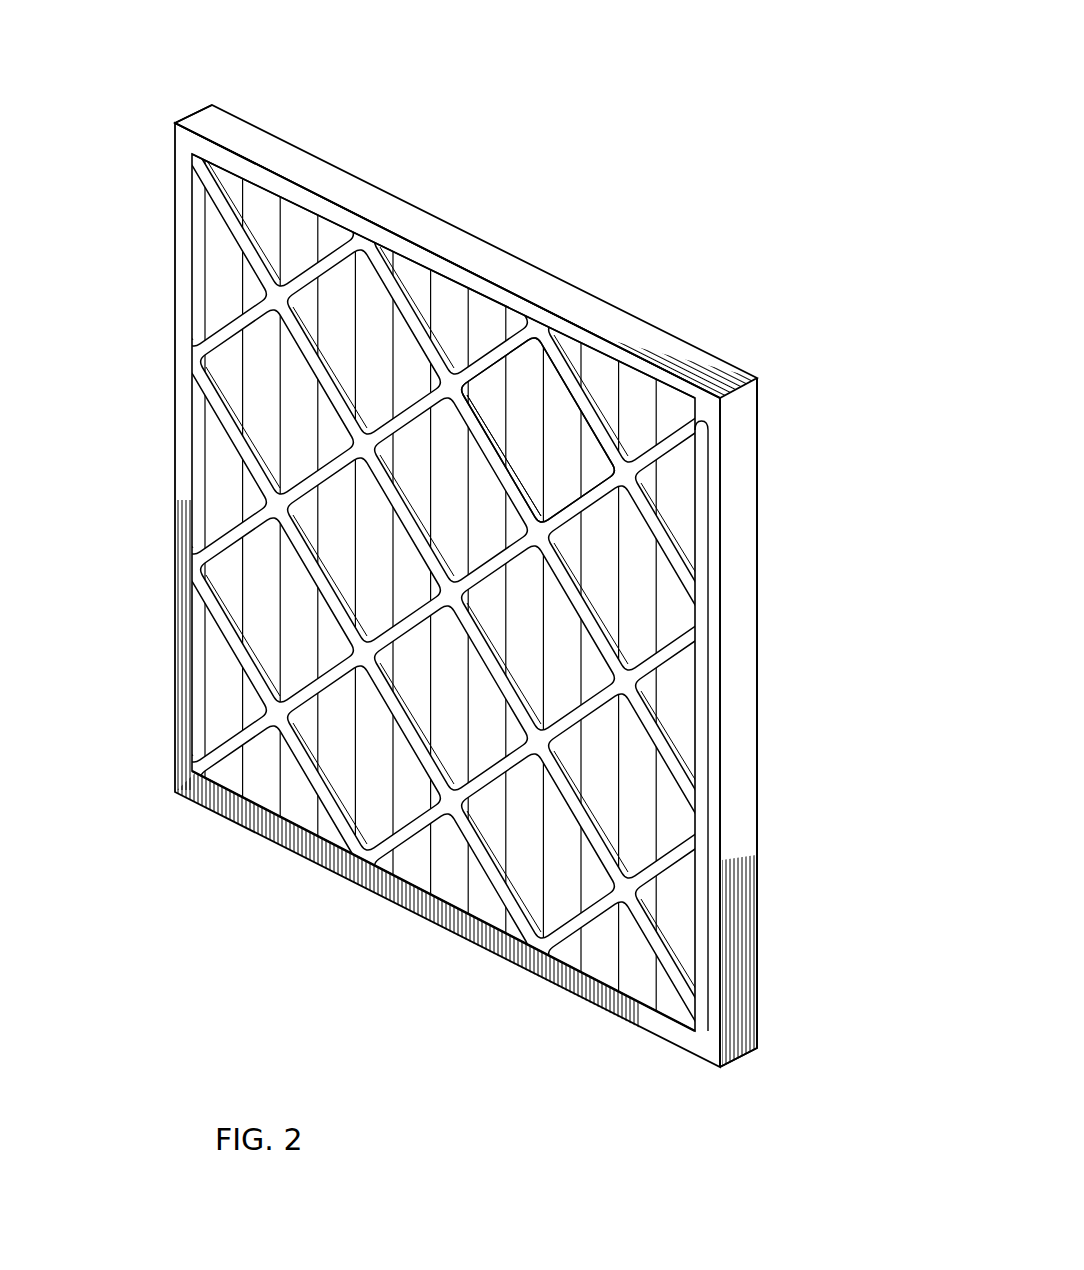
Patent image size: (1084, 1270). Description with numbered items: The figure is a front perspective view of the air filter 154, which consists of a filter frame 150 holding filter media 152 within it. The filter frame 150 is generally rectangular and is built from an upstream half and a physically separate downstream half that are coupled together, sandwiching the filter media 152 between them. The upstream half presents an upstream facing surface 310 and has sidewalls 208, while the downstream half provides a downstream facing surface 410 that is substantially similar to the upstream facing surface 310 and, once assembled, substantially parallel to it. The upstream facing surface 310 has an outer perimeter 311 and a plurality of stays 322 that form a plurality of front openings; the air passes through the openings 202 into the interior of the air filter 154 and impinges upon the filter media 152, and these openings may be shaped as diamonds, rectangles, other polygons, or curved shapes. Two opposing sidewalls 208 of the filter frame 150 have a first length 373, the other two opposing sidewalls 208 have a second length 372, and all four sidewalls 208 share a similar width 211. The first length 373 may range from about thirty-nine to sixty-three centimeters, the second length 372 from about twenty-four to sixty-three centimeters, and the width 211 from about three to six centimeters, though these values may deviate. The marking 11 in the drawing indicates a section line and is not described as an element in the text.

The air filter 154 is at (646, 156).
The filter frame 150 is at (743, 468).
The filter media 152 is at (640, 592).
The openings 202 is at (592, 365).
The sidewalls 208 is at (743, 608).
The width 211 is at (730, 769).
The upstream facing surface 310 is at (585, 985).
The outer perimeter 311 is at (713, 512).
The stays 322 is at (487, 335).
The second length 372 is at (205, 125).
The first length 373 is at (743, 708).
The downstream facing surface 410 is at (302, 150).
The section line 11 is at (635, 305).